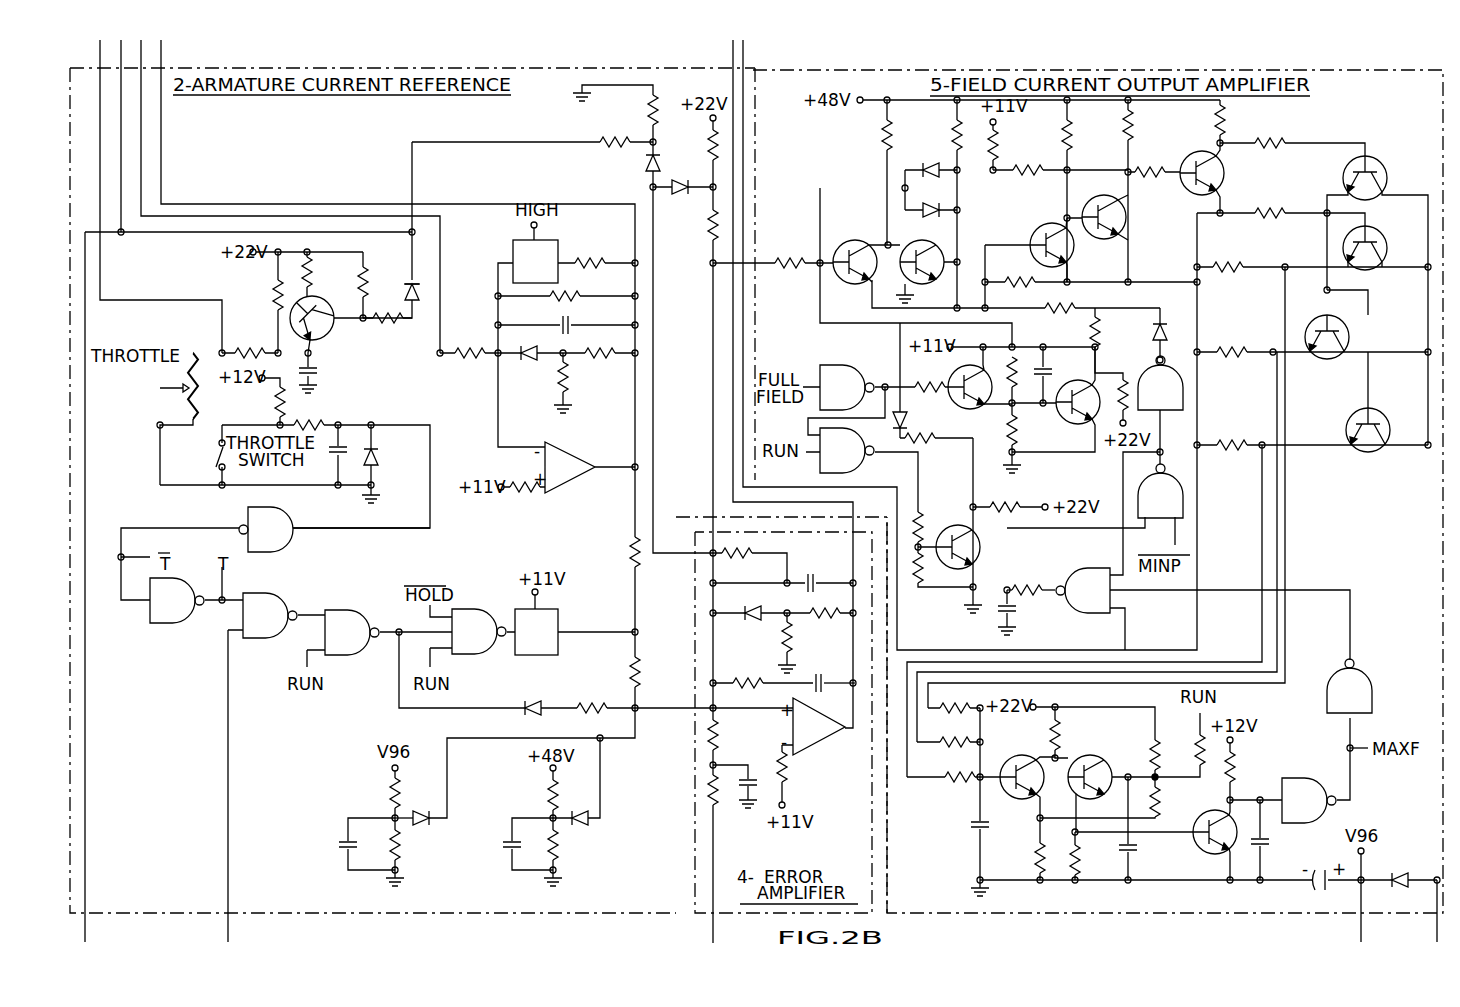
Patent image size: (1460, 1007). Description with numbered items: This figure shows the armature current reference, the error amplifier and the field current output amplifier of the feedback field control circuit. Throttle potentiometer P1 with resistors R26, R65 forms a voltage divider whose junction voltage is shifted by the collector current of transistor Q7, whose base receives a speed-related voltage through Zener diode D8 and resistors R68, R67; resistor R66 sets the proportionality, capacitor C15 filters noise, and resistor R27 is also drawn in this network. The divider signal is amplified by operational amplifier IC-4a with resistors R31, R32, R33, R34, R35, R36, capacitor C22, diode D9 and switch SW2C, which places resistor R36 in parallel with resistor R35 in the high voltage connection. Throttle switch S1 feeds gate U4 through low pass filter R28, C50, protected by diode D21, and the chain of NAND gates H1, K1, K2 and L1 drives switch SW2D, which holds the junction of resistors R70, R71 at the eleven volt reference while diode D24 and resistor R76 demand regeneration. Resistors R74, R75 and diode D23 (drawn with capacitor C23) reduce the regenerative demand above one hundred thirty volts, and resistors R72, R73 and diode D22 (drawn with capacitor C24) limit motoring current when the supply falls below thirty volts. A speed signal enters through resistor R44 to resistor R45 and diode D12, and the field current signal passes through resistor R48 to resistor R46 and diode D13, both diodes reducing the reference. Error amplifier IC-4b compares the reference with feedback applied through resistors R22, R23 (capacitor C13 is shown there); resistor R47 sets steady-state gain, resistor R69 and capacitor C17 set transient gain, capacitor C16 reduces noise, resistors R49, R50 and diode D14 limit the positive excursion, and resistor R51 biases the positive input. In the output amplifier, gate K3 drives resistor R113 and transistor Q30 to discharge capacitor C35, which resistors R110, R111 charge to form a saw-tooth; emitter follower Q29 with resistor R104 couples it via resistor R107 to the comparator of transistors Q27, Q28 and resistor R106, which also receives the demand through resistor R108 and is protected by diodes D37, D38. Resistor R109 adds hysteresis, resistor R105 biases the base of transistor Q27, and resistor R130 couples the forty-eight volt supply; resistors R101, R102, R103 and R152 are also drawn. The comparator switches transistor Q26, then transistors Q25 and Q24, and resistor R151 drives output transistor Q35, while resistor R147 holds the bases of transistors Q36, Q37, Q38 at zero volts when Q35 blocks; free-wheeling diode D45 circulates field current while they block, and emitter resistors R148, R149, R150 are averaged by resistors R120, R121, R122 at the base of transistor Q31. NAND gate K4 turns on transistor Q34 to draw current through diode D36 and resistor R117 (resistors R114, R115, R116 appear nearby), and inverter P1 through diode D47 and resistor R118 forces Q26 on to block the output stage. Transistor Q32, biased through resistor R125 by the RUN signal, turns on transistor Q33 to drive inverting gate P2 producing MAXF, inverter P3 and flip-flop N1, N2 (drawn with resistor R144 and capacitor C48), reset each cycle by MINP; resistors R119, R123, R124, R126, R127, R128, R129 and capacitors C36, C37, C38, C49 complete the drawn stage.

The resistor R65 is at (257, 302).
The resistor R66 is at (323, 274).
The resistor R67 is at (377, 276).
The transistor Q7 is at (322, 320).
The resistor R68 is at (389, 327).
The Zener diode D8 is at (396, 294).
The resistor R26 is at (250, 341).
The capacitor C15 is at (329, 373).
The throttle potentiometer P1 is at (666, 419).
The resistor R27 is at (258, 404).
The resistor R28 is at (326, 416).
The throttle switch S1 is at (204, 455).
The capacitor C50 is at (316, 455).
The diode D21 is at (391, 455).
The gate U4 is at (334, 529).
The NAND gate H1 is at (196, 600).
The NAND gate K1 is at (276, 615).
The NAND gate K2 is at (379, 638).
The NAND gate L1 is at (472, 636).
The switch 2D SW2D is at (575, 622).
The diode D24 is at (514, 696).
The resistor R76 is at (581, 695).
The operational amplifier IC-4a is at (590, 456).
The resistor R33 is at (513, 500).
The switch 2C SW2C is at (528, 259).
The resistor R36 is at (596, 247).
The resistor R35 is at (566, 286).
The capacitor C22 is at (566, 317).
The diode D9 is at (530, 342).
The resistor R34 is at (599, 366).
The resistor R32 is at (540, 383).
The resistor R31 is at (469, 340).
The resistor R70 is at (612, 543).
The resistor R71 is at (619, 669).
The resistor R45 is at (615, 113).
The resistor R44 is at (592, 131).
The diode D12 is at (628, 164).
The diode D13 is at (683, 169).
The resistor R46 is at (694, 139).
The resistor R48 is at (689, 220).
The resistor R74 is at (369, 794).
The resistor R75 is at (414, 852).
The capacitor C23 is at (336, 844).
The diode D23 is at (416, 803).
The resistor R72 is at (527, 794).
The resistor R73 is at (575, 852).
The capacitor C24 is at (506, 844).
The diode D22 is at (576, 781).
The resistor R47 is at (755, 557).
The capacitor C16 is at (783, 574).
The diode D14 is at (750, 625).
The resistor R49 is at (820, 602).
The resistor R50 is at (805, 643).
The resistor R69 is at (763, 669).
The capacitor C17 is at (830, 669).
The operational amplifier IC-4b is at (789, 731).
The resistor R51 is at (807, 773).
The resistor R23 is at (733, 729).
The capacitor C13 is at (740, 773).
The resistor R22 is at (730, 808).
The resistor R106 is at (861, 172).
The resistor R130 is at (933, 204).
The resistor R105 is at (1018, 144).
The resistor R103 is at (1090, 159).
The diode D38 is at (928, 170).
The diode D37 is at (931, 198).
The resistor R109 is at (1048, 180).
The resistor R101 is at (1154, 157).
The resistor R102 is at (1152, 136).
The transistor Q24 is at (1192, 166).
The resistor R152 is at (1245, 118).
The resistor R151 is at (1292, 134).
The output transistor Q35 is at (1377, 218).
The resistor R147 is at (1281, 206).
The output transistor Q36 is at (1378, 242).
The emitter resistor R148 is at (1312, 254).
The resistor R119 is at (1091, 276).
The resistor R118 is at (1016, 296).
The resistor R107 is at (1117, 342).
The diode D47 is at (1164, 321).
The resistor R108 is at (773, 247).
The transistor Q28 is at (860, 248).
The transistor Q27 is at (922, 262).
The transistor Q26 is at (1029, 240).
The transistor Q25 is at (1097, 206).
The inverting gate K3 is at (844, 387).
The resistor R113 is at (916, 374).
The transistor Q30 is at (971, 381).
The diode D36 is at (918, 412).
The NAND gate K4 is at (862, 449).
The resistor R117 is at (936, 453).
The resistor R114 is at (941, 514).
The resistor R115 is at (939, 584).
The transistor Q34 is at (950, 525).
The resistor R116 is at (1007, 494).
The resistor R110 is at (991, 362).
The resistor R111 is at (994, 438).
The capacitor C35 is at (1056, 362).
The transistor Q29 is at (1056, 399).
The resistor R104 is at (1127, 382).
The gate N2 is at (1095, 498).
The gate N1 is at (1076, 590).
The resistor R144 is at (1032, 574).
The capacitor C48 is at (1027, 615).
The emitter resistor R149 is at (1312, 335).
The output transistor Q37 is at (1330, 340).
The emitter resistor R150 is at (1312, 428).
The output transistor Q38 is at (1347, 402).
The resistor R120 is at (950, 717).
The resistor R121 is at (946, 750).
The resistor R122 is at (951, 789).
The capacitor C36 is at (953, 802).
The transistor Q31 is at (1022, 773).
The resistor R128 is at (1015, 849).
The resistor R123 is at (1079, 732).
The transistor Q32 is at (1111, 781).
The resistor R124 is at (1133, 743).
The resistor R126 is at (1127, 796).
The resistor R125 is at (1182, 743).
The capacitor C37 is at (1144, 828).
The resistor R127 is at (1099, 856).
The transistor Q33 is at (1207, 840).
The resistor R129 is at (1254, 769).
The inverting gate P2 is at (1290, 770).
The inverting gate P3 is at (1349, 686).
The capacitor C38 is at (1287, 840).
The electrolytic capacitor C49 is at (1301, 889).
The free-wheeling diode D45 is at (1386, 893).